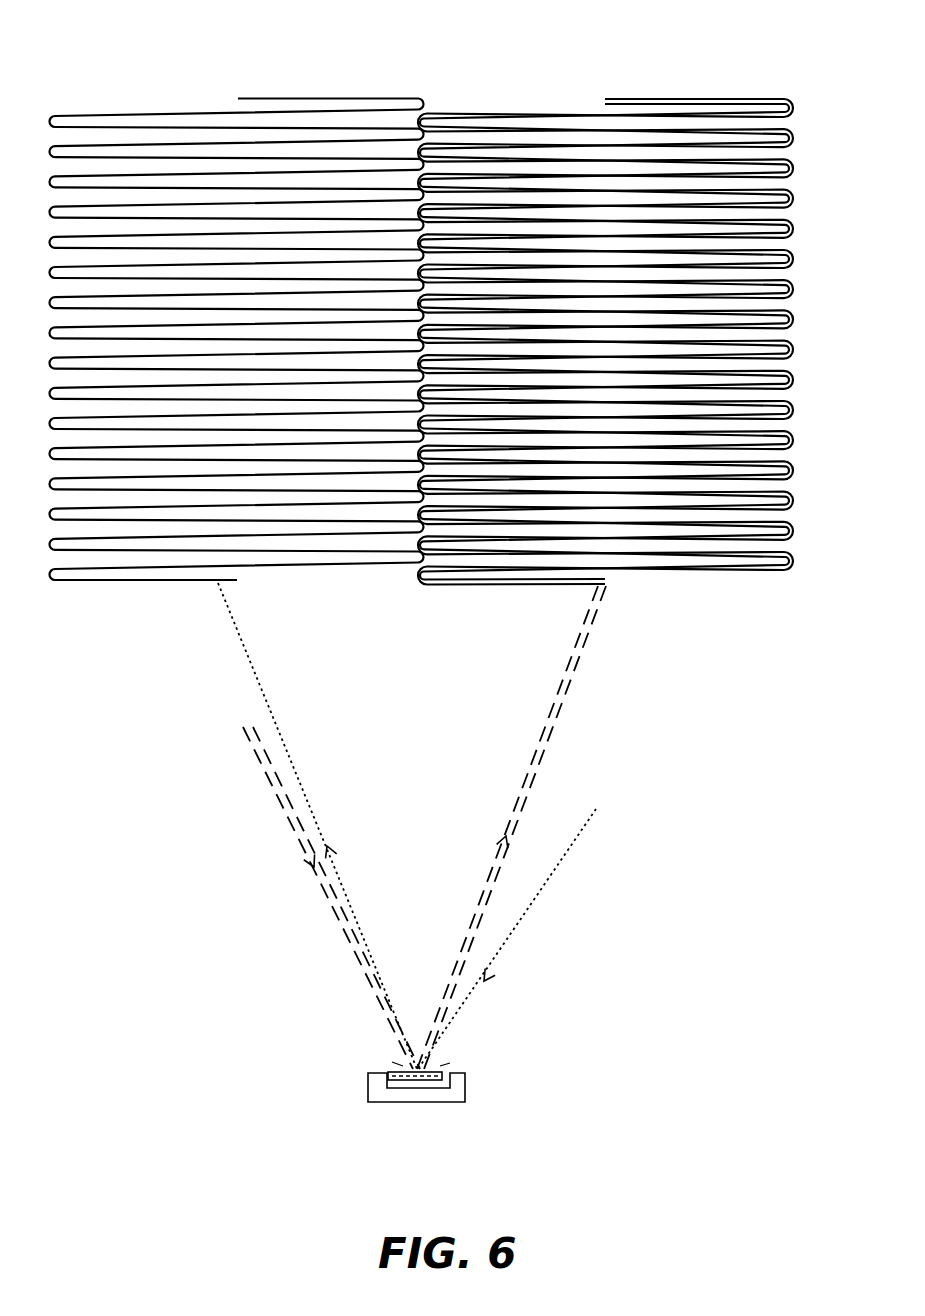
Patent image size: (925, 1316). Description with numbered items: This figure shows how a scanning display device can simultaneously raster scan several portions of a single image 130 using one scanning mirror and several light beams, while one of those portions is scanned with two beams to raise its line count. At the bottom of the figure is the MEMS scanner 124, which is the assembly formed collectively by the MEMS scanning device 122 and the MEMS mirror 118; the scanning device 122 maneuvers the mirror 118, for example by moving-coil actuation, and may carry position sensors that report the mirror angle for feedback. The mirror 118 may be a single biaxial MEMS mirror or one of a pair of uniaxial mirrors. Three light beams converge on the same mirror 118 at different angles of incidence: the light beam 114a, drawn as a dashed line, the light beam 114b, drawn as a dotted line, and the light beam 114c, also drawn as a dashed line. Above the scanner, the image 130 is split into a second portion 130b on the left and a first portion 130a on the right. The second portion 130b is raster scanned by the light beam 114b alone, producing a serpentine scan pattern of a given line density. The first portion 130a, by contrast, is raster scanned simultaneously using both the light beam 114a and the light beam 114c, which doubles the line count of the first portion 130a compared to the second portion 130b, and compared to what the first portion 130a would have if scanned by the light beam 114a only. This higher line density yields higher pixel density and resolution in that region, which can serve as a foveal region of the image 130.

The image 130 is at (795, 40).
The first portion of the image 130a is at (596, 88).
The second portion of the image 130b is at (218, 90).
The light beam 114a is at (266, 772).
The light beam 114b is at (288, 747).
The light beam 114c is at (290, 830).
The MEMS mirror 118 is at (440, 1068).
The MEMS scanning device 122 is at (420, 1102).
The MEMS scanner 124 is at (476, 1101).